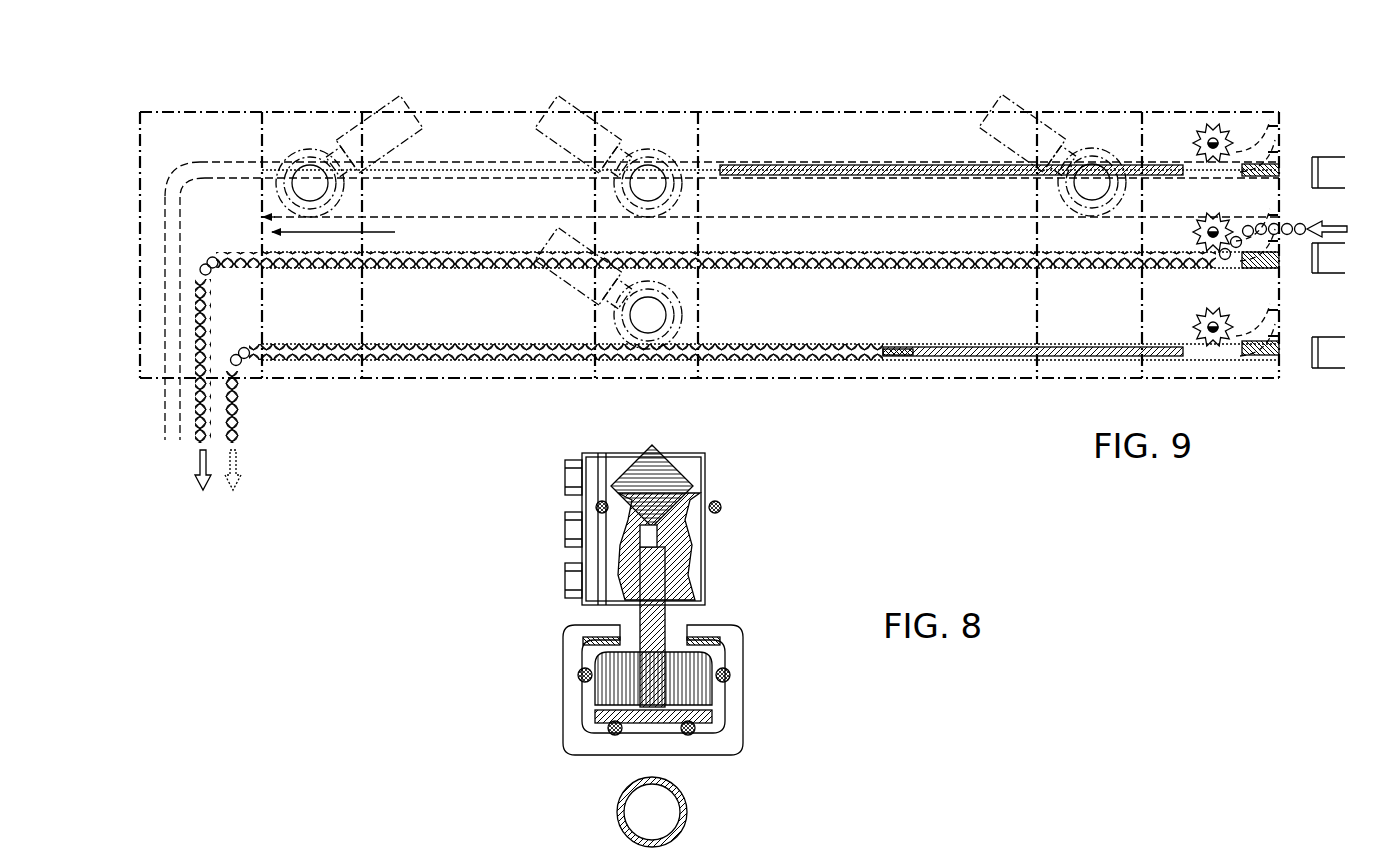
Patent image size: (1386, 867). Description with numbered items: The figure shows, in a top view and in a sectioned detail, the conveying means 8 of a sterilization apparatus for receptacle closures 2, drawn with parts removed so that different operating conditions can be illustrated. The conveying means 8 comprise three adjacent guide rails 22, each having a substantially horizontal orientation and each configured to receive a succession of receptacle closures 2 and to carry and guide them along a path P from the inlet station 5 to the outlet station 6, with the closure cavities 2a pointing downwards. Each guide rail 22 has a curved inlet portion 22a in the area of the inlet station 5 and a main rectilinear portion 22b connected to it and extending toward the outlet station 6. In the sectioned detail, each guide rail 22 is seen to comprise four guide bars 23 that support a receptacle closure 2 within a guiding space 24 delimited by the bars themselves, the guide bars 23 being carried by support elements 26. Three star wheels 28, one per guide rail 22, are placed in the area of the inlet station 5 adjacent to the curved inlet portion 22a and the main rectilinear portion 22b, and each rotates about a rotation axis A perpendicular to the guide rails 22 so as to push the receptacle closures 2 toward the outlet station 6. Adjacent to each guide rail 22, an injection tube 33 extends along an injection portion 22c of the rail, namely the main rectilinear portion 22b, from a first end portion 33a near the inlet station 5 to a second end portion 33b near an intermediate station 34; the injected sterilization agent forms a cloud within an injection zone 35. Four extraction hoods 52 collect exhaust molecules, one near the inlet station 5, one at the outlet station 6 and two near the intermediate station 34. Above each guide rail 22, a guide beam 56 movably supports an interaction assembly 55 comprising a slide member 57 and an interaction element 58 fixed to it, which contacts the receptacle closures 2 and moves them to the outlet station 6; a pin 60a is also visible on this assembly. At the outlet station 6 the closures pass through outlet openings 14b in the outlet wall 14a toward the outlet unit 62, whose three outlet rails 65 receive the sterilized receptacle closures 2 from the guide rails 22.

In FIG. 9, the receptacle closures 2 is at (354, 268).
In FIG. 8, the receptacle closures 2 is at (702, 694).
In FIG. 8, the closure cavities 2a is at (666, 736).
In FIG. 9, the inlet station 5 is at (1290, 197).
In FIG. 9, the outlet station 6 is at (334, 233).
In FIG. 9, the conveying means 8 is at (1278, 100).
In FIG. 8, the conveying means 8 is at (552, 774).
In FIG. 9, the outlet wall 14a is at (262, 142).
In FIG. 9, the outlet openings 14b is at (268, 156).
In FIG. 9, the guide rails 22 is at (915, 158).
In FIG. 8, the guide rails 22 is at (552, 703).
In FIG. 9, the curved inlet portion 22a is at (1279, 120).
In FIG. 9, the main rectilinear portion 22b is at (880, 162).
In FIG. 9, the injection portion 22c is at (830, 166).
In FIG. 8, the guide bars 23 is at (578, 672).
In FIG. 8, the guiding space 24 is at (722, 660).
In FIG. 8, the support elements 26 is at (570, 735).
In FIG. 9, the star wheels 28 is at (1232, 150).
In FIG. 9, the injection tube 33 is at (948, 178).
In FIG. 8, the injection tube 33 is at (616, 818).
In FIG. 9, the first end portion 33a is at (1176, 166).
In FIG. 9, the second end portion 33b is at (728, 166).
In FIG. 9, the intermediate station 34 is at (770, 200).
In FIG. 9, the injection zone 35 is at (806, 200).
In FIG. 9, the extraction hoods 52 is at (385, 120).
In FIG. 9, the interaction assembly 55 is at (893, 364).
In FIG. 8, the interaction assembly 55 is at (556, 510).
In FIG. 8, the guide beam 56 is at (676, 490).
In FIG. 8, the slide member 57 is at (690, 556).
In FIG. 8, the interaction element 58 is at (664, 612).
In FIG. 8, the pin 60a is at (597, 507).
In FIG. 9, the outlet unit 62 is at (130, 384).
In FIG. 9, the outlet rails 65 is at (196, 156).
In FIG. 9, the path P is at (462, 210).
In FIG. 9, the rotation axis A is at (1212, 132).